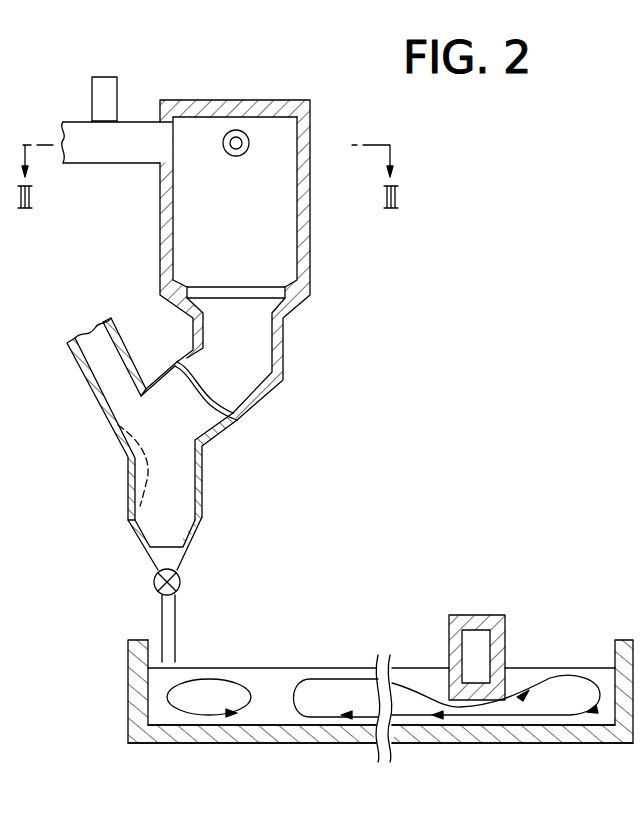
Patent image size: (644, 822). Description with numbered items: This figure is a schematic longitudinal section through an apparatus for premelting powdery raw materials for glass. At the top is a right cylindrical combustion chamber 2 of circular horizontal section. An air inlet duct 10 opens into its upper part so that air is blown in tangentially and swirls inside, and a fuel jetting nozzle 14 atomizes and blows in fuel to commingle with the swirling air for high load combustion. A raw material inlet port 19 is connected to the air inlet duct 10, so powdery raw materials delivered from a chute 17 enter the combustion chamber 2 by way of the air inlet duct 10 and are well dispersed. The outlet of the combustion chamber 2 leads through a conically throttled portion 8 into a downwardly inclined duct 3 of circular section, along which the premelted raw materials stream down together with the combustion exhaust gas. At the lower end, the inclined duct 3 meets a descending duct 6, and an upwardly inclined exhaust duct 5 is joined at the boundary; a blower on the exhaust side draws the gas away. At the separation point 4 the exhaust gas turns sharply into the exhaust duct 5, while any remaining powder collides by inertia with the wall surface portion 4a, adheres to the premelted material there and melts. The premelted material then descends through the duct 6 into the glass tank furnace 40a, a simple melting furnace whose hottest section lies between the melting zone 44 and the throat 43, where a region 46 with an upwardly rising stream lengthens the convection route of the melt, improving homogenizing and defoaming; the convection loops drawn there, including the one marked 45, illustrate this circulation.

The combustion chamber 2 is at (310, 115).
The downwardly inclined duct 3 is at (250, 403).
The separation point 4 is at (172, 457).
The wall surface portion 4a is at (130, 467).
The upwardly inclined exhaust duct 5 is at (97, 360).
The duct 6 is at (180, 512).
The conically throttled portion 8 is at (300, 300).
The air inlet duct 10 is at (98, 145).
The fuel jetting nozzle 14 is at (234, 130).
The chute 17 is at (108, 82).
The raw material inlet port 19 is at (100, 120).
The glass tank furnace 40a is at (330, 658).
The throat 43 is at (477, 733).
The melting zone 44 is at (208, 690).
The circulation flow 45 is at (570, 693).
The region of upwardly rising stream 46 is at (265, 680).